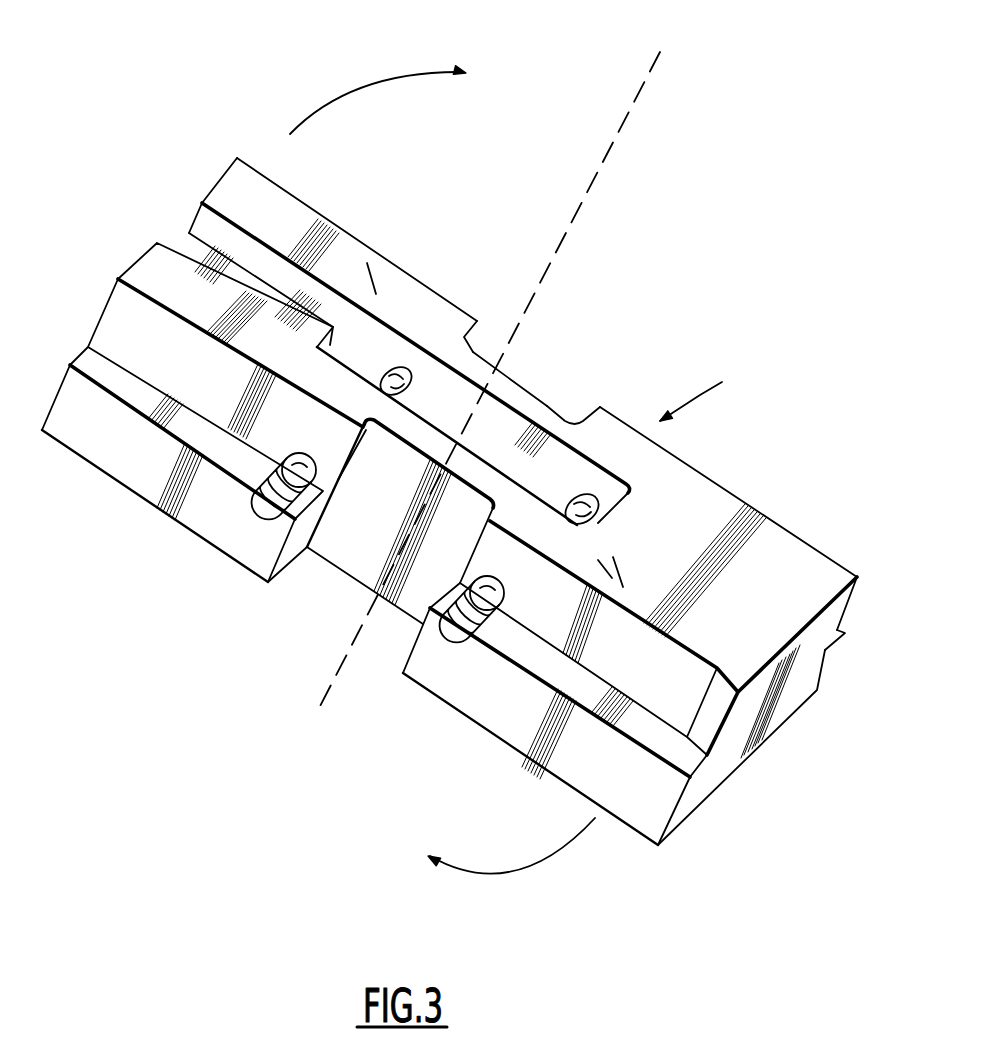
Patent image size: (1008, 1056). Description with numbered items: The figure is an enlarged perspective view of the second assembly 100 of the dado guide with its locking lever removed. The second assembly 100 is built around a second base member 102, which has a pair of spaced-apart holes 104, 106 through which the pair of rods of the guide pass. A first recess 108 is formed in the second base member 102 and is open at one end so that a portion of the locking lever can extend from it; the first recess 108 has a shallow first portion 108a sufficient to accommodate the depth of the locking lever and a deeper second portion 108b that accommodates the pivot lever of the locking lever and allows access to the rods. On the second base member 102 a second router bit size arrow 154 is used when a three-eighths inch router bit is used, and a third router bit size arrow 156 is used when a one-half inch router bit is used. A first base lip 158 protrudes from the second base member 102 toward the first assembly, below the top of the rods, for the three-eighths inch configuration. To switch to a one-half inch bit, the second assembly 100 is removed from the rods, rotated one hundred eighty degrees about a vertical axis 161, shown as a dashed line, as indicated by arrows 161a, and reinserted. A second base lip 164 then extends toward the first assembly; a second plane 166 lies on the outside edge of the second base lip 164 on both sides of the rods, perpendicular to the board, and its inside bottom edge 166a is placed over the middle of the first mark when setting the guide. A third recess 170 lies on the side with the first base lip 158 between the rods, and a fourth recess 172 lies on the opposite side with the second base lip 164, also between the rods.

The second assembly 100 is at (717, 395).
The second base member 102 is at (770, 572).
The hole 104 is at (598, 510).
The hole 106 is at (400, 370).
The first recess 108 is at (252, 272).
The first portion of the first recess 108a is at (212, 222).
The second portion of the first recess 108b is at (492, 427).
The second router bit size arrow 154 is at (441, 306).
The third router bit size arrow 156 is at (557, 551).
The first base lip 158 is at (835, 645).
The vertical axis 161 is at (622, 130).
The arrows 161a is at (352, 88).
The second base lip 164 is at (130, 388).
The second plane 166 is at (105, 432).
The inside bottom edge 166a is at (135, 505).
The third recess 170 is at (560, 398).
The fourth recess 172 is at (385, 525).